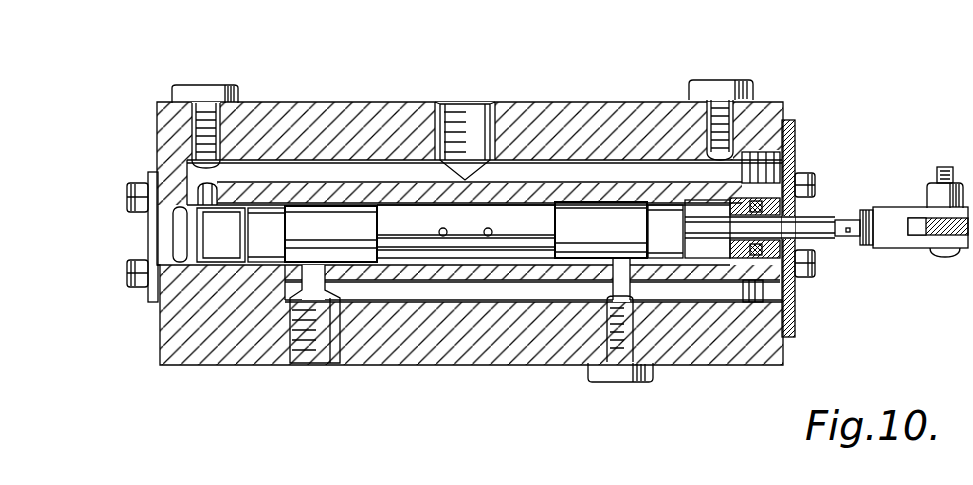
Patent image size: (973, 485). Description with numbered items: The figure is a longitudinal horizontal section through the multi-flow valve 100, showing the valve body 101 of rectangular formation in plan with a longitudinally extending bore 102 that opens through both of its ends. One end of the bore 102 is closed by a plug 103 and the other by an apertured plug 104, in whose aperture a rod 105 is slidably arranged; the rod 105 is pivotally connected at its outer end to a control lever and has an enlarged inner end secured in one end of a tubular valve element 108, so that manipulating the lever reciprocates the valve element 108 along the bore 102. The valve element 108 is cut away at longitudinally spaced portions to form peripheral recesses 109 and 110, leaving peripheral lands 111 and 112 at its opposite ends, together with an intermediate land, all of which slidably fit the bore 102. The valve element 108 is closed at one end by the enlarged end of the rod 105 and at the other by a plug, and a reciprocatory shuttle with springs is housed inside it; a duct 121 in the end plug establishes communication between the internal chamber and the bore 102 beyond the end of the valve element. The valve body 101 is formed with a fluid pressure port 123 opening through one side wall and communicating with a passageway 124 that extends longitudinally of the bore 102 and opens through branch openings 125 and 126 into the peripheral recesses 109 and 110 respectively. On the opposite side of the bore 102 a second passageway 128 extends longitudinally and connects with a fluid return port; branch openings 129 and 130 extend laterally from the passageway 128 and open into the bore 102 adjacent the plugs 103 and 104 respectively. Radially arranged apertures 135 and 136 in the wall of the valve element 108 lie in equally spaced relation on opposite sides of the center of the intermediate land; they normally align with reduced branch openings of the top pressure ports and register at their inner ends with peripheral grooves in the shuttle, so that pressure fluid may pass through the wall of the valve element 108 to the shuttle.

The multi-flow valve 100 is at (768, 93).
The valve body 101 is at (682, 93).
The bore 102 is at (217, 252).
The plug 103 is at (168, 237).
The apertured plug 104 is at (757, 282).
The rod 105 is at (818, 223).
The tubular valve element 108 is at (613, 220).
The peripheral recess 109 is at (332, 208).
The peripheral recess 110 is at (580, 205).
The peripheral land 111 is at (262, 242).
The peripheral land 112 is at (673, 237).
The duct 121 is at (472, 122).
The fluid pressure port 123 is at (323, 355).
The passageway 124 is at (455, 297).
The branch opening 125 is at (300, 267).
The branch opening 126 is at (620, 277).
The passageway 128 is at (528, 172).
The branch opening 129 is at (188, 197).
The branch opening 130 is at (730, 180).
The aperture 135 is at (438, 232).
The aperture 136 is at (493, 232).